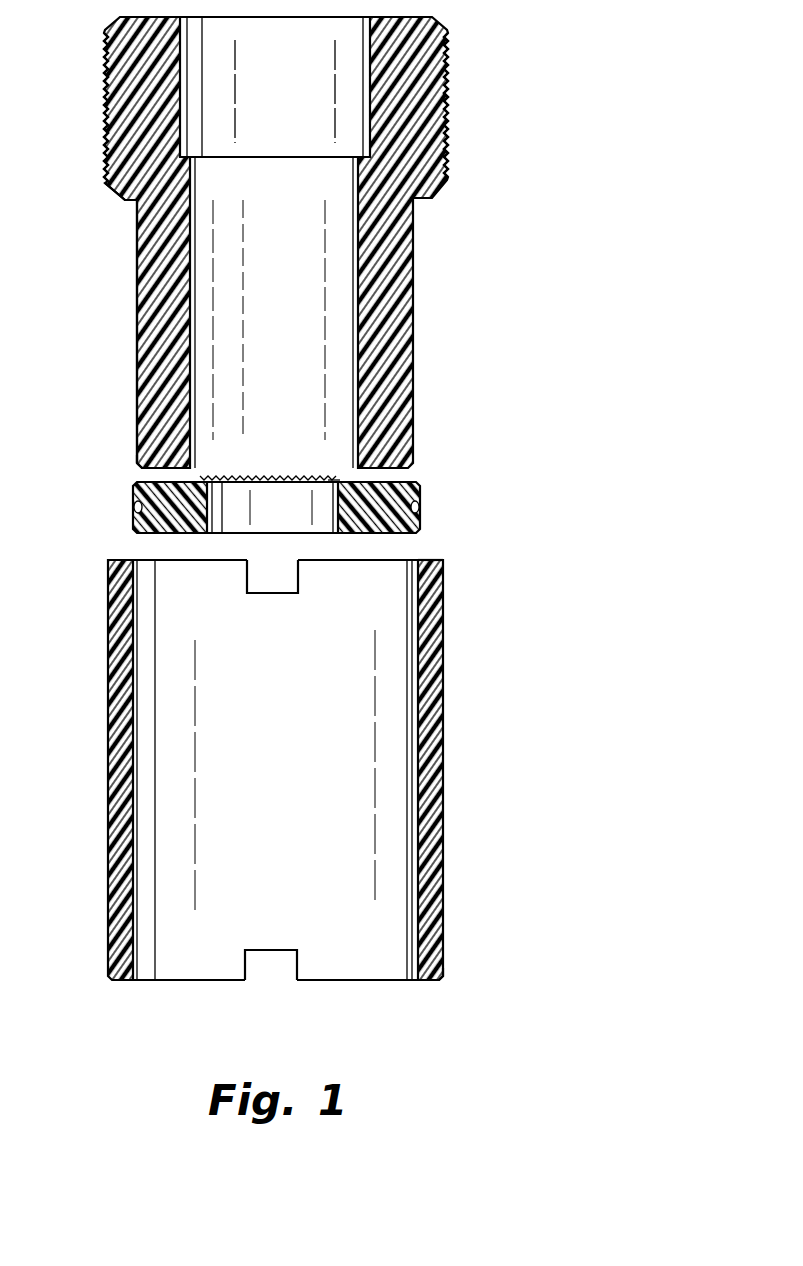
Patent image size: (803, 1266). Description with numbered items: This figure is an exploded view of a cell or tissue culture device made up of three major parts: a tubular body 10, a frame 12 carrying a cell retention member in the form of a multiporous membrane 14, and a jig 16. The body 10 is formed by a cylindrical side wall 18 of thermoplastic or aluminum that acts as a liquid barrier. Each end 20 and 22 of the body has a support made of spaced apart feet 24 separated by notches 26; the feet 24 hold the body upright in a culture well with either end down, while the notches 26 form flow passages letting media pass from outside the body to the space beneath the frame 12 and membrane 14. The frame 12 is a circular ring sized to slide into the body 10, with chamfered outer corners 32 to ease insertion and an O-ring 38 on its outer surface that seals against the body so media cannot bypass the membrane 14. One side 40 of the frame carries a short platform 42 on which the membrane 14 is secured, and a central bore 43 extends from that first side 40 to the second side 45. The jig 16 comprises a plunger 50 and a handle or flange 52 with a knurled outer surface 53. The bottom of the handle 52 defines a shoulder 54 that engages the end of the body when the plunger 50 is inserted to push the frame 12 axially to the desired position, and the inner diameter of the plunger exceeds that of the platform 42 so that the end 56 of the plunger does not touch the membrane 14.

The tubular body 10 is at (447, 718).
The frame 12 is at (422, 492).
The multiporous membrane 14 is at (272, 477).
The jig 16 is at (453, 253).
The cylindrical side wall 18 is at (447, 893).
The end of the body 20 is at (428, 980).
The end of the body 22 is at (435, 562).
The feet 24 is at (145, 560).
The notches 26 is at (283, 592).
The outer corners 32 is at (133, 484).
The O-ring 38 is at (133, 508).
The first side of the frame 40 is at (405, 482).
The platform 42 is at (345, 480).
The bore 43 is at (237, 525).
The second side of the frame 45 is at (357, 533).
The plunger 50 is at (137, 345).
The handle or flange 52 is at (104, 107).
The knurled outer surface 53 is at (447, 123).
The shoulder 54 is at (130, 200).
The end of the plunger 56 is at (152, 470).